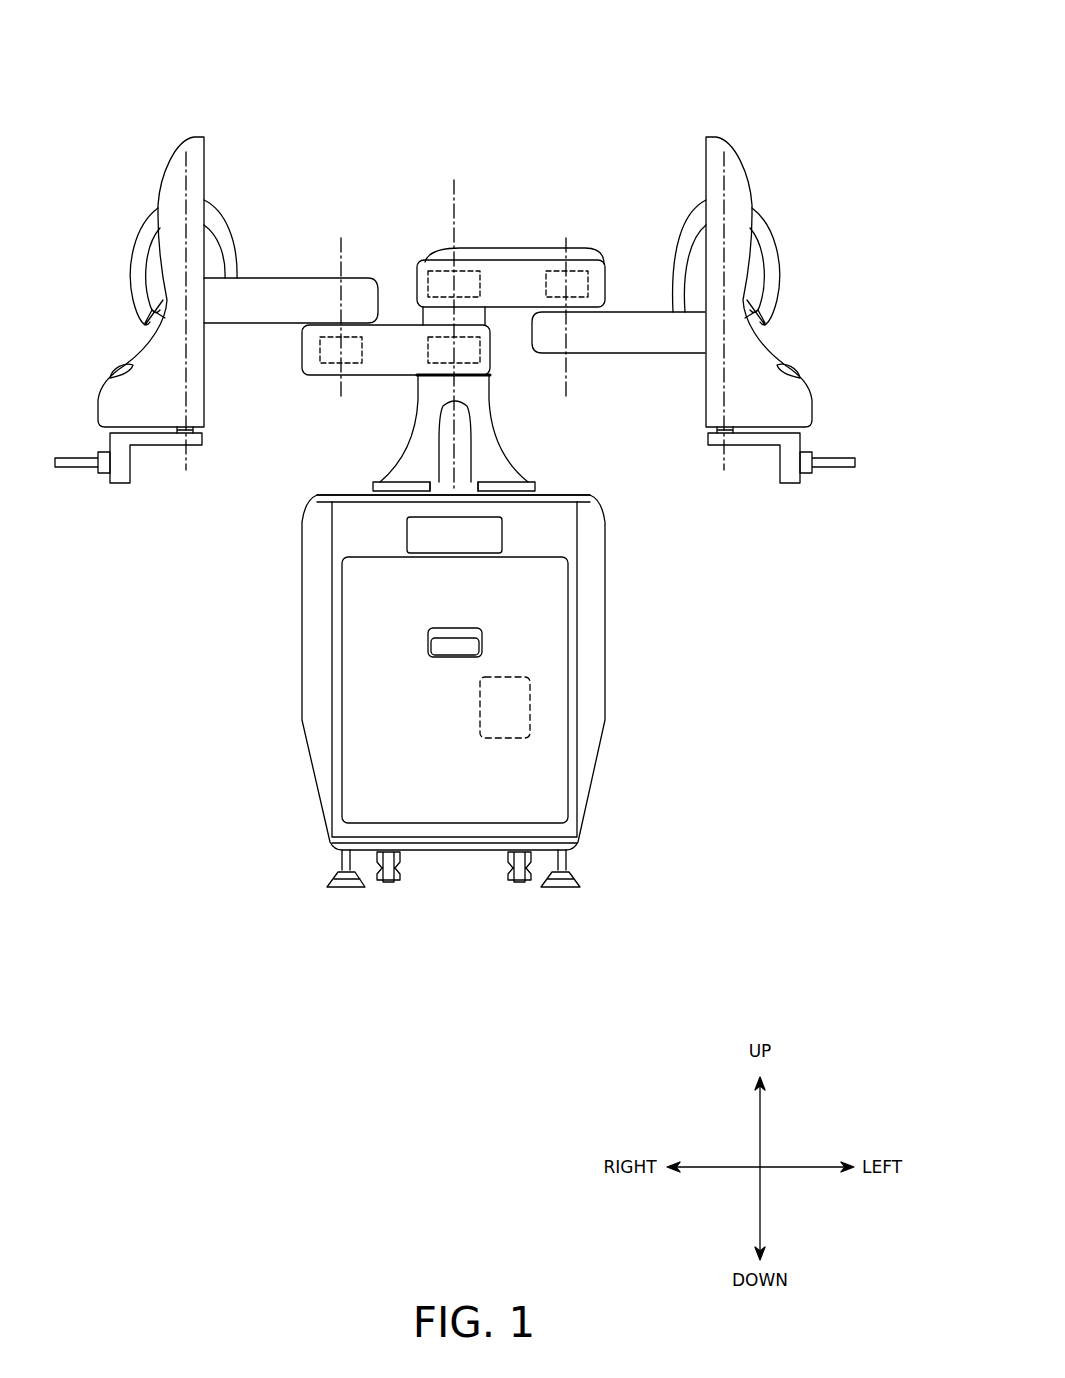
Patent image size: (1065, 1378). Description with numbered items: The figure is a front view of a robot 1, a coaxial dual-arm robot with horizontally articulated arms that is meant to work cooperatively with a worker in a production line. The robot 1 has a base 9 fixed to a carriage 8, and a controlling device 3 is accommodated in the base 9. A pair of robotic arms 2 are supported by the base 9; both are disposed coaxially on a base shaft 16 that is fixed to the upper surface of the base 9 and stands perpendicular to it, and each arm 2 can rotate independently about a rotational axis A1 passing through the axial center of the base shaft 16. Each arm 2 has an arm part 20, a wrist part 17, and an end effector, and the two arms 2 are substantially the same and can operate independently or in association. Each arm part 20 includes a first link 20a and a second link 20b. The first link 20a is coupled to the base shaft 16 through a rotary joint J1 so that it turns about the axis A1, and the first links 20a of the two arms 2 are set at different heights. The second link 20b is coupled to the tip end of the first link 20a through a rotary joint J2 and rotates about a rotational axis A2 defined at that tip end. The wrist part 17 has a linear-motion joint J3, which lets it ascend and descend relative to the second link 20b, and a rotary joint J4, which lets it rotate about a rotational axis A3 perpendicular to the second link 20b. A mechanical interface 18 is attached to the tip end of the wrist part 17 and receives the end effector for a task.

The robot 1 is at (668, 96).
The robotic arm 2 is at (203, 135).
The controlling device 3 is at (530, 705).
The carriage 8 is at (610, 617).
The base 9 is at (560, 490).
The base shaft 16 is at (503, 436).
The wrist part 17 is at (133, 347).
The mechanical interface 18 is at (120, 485).
The arm part 20 is at (454, 245).
The first link 20a is at (403, 325).
The second link 20b is at (270, 278).
The rotational axis A1 is at (453, 321).
The rotational axis A2 is at (453, 304).
The rotational axis A3 is at (183, 170).
The rotary joint J1 is at (440, 258).
The rotary joint J2 is at (304, 348).
The linear-motion joint J3 is at (175, 189).
The rotary joint J4 is at (205, 432).